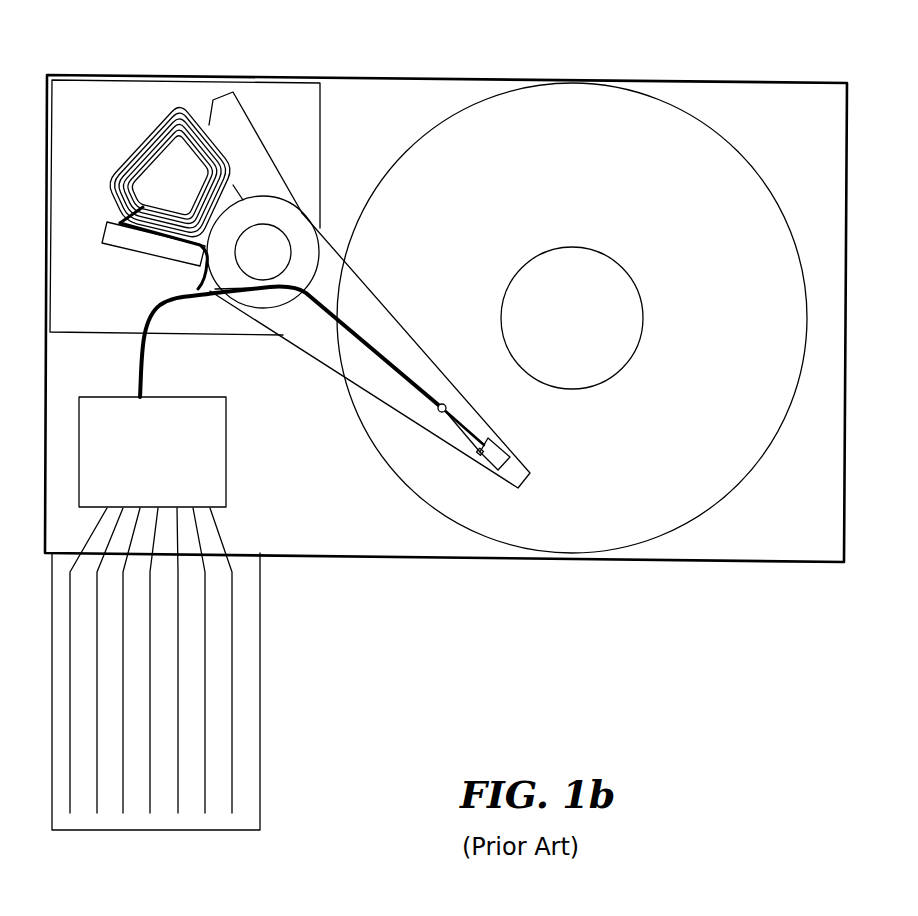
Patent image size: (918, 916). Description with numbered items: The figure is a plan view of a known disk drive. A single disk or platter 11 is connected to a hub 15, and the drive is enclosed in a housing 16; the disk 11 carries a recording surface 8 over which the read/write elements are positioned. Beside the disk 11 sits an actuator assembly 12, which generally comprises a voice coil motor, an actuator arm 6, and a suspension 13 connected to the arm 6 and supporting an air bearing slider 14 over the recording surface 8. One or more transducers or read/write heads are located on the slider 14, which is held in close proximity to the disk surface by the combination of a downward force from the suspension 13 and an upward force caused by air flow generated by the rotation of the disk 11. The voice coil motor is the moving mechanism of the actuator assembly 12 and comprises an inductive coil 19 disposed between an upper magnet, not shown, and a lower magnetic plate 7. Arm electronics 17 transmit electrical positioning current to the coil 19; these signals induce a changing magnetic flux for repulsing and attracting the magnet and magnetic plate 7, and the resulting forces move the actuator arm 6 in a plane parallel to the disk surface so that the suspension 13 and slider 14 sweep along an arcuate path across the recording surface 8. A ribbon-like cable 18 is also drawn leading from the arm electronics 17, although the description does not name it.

The actuator arm 6 is at (262, 143).
The lower magnetic plate 7 is at (71, 275).
The recording surface 8 is at (572, 290).
The disk 11 is at (753, 166).
The actuator assembly 12 is at (314, 181).
The suspension 13 is at (400, 326).
The air bearing slider 14 is at (500, 446).
The hub 15 is at (555, 278).
The housing 16 is at (795, 82).
The arm electronics 17 is at (228, 463).
The flexible cable connector 18 is at (262, 732).
The inductive coil 19 is at (147, 137).